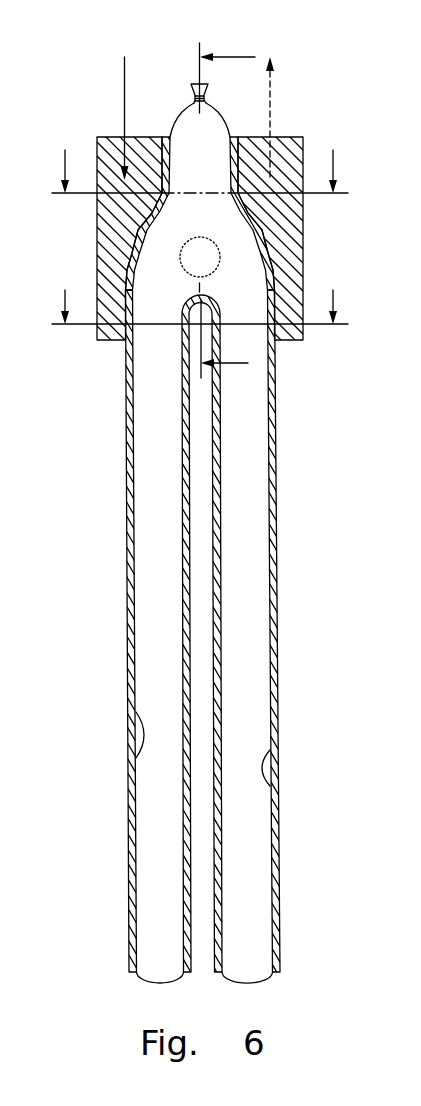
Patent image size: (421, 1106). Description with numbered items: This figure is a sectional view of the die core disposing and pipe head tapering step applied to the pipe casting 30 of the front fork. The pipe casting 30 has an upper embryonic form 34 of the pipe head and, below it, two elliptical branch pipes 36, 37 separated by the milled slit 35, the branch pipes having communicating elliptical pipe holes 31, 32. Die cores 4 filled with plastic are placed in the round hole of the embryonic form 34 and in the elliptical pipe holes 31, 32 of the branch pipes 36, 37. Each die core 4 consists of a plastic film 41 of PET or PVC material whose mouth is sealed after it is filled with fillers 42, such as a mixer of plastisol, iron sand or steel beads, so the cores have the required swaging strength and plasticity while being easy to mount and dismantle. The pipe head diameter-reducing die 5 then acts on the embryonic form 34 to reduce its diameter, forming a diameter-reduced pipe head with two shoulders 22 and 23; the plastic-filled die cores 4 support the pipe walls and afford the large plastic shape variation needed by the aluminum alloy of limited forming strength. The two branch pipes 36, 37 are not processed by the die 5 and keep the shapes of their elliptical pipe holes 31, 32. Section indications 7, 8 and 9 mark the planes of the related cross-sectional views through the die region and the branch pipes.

The die core 4 is at (147, 491).
The pipe head diameter-reducing die 5 is at (210, 553).
The section line 7- 7 is at (200, 155).
The section line 8- 8 is at (200, 288).
The section line 9- 9 is at (228, 197).
The shoulder 22 is at (140, 227).
The shoulder 23 is at (257, 214).
The pipe casting 30 is at (210, 553).
The elliptical pipe hole 31 is at (131, 760).
The elliptical pipe hole 32 is at (278, 748).
The embryonic form 34 is at (165, 158).
The slit 35 is at (203, 830).
The elliptical branch pipe 36 is at (127, 653).
The elliptical branch pipe 37 is at (278, 650).
The plastic film 41 is at (214, 122).
The fillers 42 is at (189, 268).